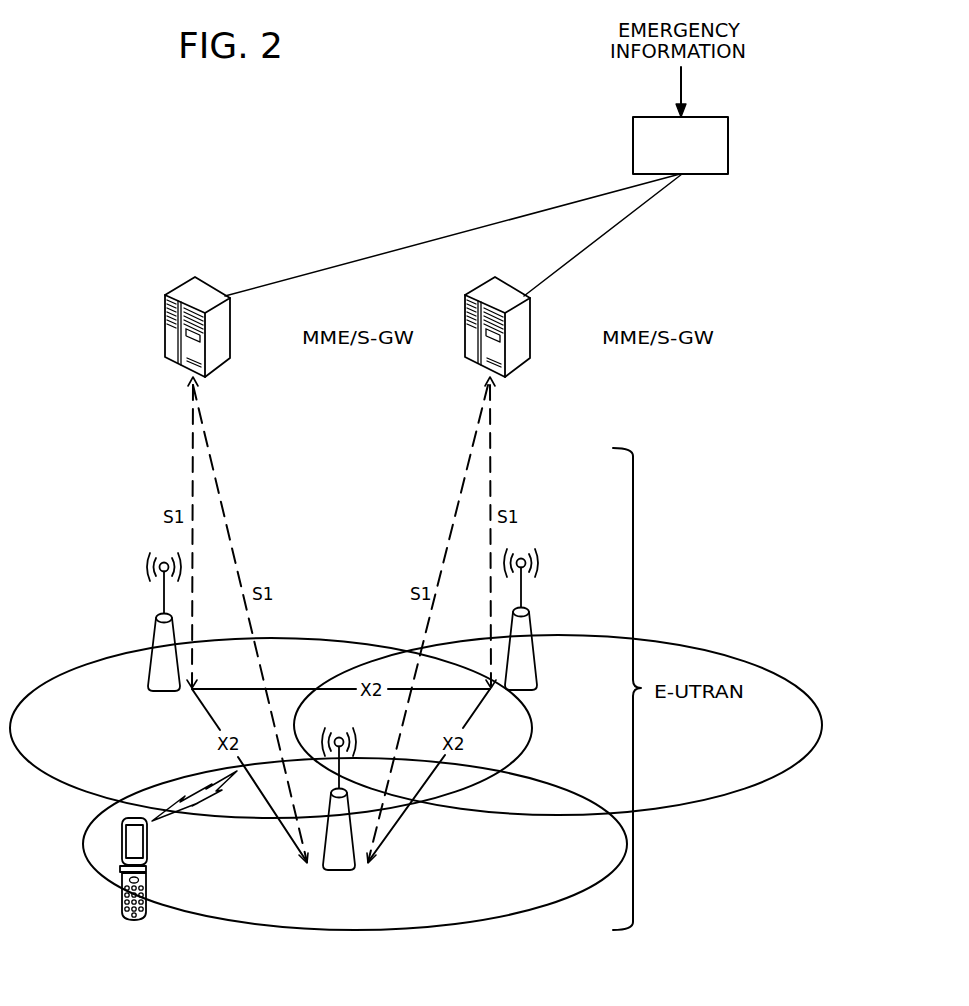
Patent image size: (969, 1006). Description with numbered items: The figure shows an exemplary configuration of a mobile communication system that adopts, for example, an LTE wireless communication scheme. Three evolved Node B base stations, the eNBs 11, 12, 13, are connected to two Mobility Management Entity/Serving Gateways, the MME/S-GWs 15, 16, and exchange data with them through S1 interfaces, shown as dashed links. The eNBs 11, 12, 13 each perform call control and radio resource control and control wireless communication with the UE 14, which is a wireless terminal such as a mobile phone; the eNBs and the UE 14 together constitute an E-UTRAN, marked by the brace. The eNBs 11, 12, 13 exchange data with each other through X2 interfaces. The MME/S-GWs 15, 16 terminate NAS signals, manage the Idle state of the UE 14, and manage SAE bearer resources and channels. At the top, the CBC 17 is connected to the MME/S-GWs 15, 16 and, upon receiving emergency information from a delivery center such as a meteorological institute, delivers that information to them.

The eNB 11 is at (357, 868).
The eNB 12 is at (157, 619).
The eNB 13 is at (530, 613).
The UE 14 is at (135, 923).
The MME/S-GW 15 is at (232, 335).
The MME/S-GW 16 is at (532, 335).
The CBC 17 is at (701, 117).